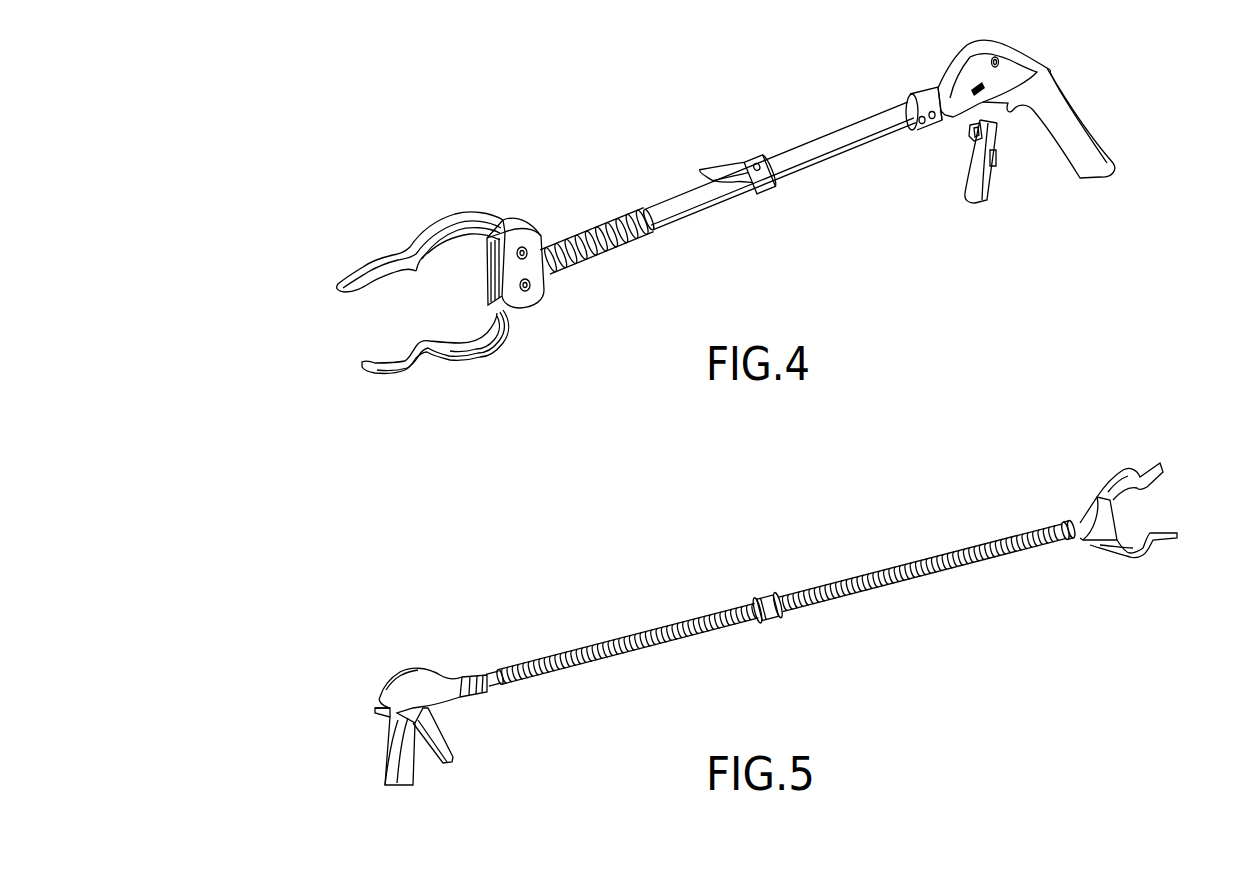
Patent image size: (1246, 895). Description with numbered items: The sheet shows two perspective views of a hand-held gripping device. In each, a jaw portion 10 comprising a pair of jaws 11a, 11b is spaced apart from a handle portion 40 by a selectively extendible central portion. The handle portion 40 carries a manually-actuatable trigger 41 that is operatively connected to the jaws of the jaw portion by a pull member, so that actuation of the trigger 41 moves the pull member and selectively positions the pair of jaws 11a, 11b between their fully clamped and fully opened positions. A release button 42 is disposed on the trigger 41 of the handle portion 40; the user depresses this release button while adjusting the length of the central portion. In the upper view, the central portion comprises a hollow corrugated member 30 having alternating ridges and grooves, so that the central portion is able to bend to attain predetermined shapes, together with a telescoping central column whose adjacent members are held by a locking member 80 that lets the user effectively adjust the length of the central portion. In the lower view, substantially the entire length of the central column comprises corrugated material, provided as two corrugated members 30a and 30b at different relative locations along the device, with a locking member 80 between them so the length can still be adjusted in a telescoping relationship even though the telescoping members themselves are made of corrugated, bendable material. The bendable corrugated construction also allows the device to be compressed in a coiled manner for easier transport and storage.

In FIG. 4, the jaw portion 10 is at (318, 360).
In FIG. 5, the jaw portion 10 is at (1129, 594).
In FIG. 4, the jaw 11a is at (461, 352).
In FIG. 5, the jaw 11a is at (1145, 552).
In FIG. 4, the jaw 11b is at (457, 220).
In FIG. 5, the jaw 11b is at (1130, 474).
In FIG. 4, the corrugated member 30 is at (598, 218).
In FIG. 5, the corrugated member 30a is at (601, 646).
In FIG. 5, the corrugated member 30b is at (886, 562).
In FIG. 4, the handle portion 40 is at (1100, 93).
In FIG. 5, the handle portion 40 is at (360, 662).
In FIG. 4, the trigger 41 is at (985, 192).
In FIG. 5, the trigger 41 is at (445, 738).
In FIG. 4, the release button 42 is at (972, 142).
In FIG. 4, the locking member 80 is at (752, 156).
In FIG. 5, the locking member 80 is at (762, 598).